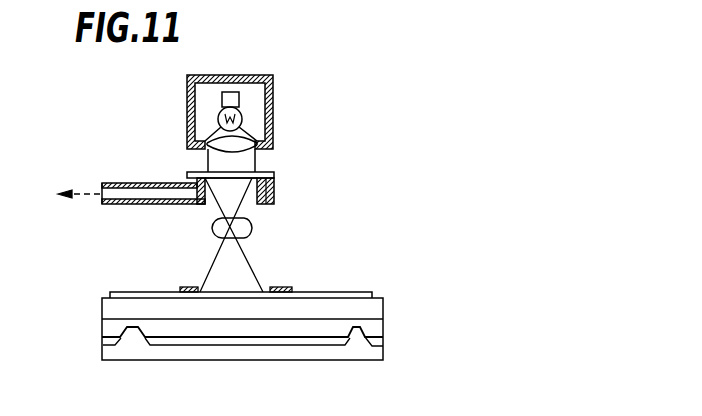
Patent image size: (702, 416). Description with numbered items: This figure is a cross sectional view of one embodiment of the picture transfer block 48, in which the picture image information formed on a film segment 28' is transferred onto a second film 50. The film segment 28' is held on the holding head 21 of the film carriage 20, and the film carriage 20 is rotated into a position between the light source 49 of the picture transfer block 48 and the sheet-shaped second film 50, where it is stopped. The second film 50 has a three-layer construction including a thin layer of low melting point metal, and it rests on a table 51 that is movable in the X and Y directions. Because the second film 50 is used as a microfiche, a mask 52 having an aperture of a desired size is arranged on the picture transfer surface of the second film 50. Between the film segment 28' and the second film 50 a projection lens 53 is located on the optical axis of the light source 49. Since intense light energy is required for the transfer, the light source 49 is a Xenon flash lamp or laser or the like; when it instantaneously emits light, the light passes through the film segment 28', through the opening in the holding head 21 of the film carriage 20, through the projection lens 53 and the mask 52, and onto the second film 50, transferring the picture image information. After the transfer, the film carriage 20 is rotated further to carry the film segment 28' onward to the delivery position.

The picture transfer block 48 is at (332, 76).
The light source 49 is at (243, 116).
The film segment 28' is at (262, 166).
The holding head 21 is at (274, 203).
The film carriage 20 is at (140, 208).
The projection lens 53 is at (240, 236).
The mask 52 is at (190, 284).
The second film 50 is at (327, 293).
The table 51 is at (397, 298).